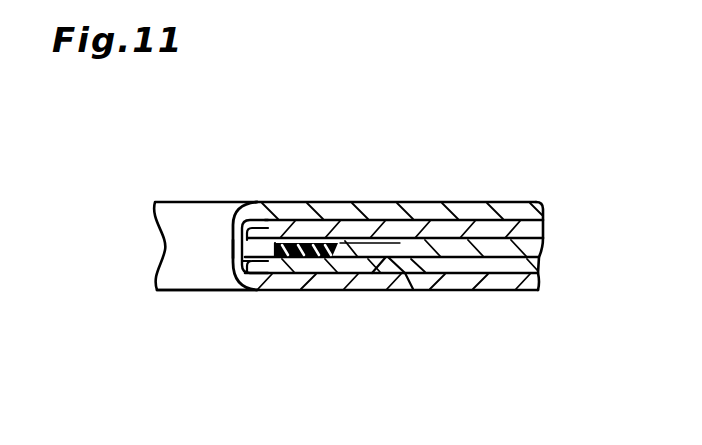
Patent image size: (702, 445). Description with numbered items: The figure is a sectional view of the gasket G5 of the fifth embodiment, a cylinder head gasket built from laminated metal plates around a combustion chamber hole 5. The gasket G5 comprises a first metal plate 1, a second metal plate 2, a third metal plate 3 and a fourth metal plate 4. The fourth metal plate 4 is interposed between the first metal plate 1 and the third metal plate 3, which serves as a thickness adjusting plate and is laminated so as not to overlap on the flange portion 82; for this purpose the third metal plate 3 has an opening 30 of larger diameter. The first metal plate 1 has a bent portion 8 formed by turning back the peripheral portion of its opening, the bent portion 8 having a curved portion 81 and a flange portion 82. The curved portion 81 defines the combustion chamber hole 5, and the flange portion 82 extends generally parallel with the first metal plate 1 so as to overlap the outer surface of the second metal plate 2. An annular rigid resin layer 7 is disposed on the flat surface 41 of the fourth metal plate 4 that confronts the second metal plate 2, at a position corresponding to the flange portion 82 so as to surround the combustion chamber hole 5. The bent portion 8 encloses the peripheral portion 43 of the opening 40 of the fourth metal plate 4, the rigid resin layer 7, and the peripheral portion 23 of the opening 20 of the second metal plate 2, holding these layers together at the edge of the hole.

The first metal plate 1 is at (506, 202).
The second metal plate 2 is at (517, 277).
The third metal plate 3 is at (532, 252).
The fourth metal plate 4 is at (527, 236).
The combustion chamber hole 5 is at (192, 222).
The annular rigid resin layer 7 is at (305, 239).
The bent portion 8 is at (347, 347).
The opening 20 is at (275, 262).
The peripheral portion 23 is at (281, 270).
The opening 30 is at (413, 289).
The opening 40 is at (257, 231).
The flat surface 41 is at (363, 245).
The peripheral portion 43 is at (284, 239).
The curved portion 81 is at (232, 250).
The flange portion 82 is at (349, 277).
The gasket G5 is at (530, 198).